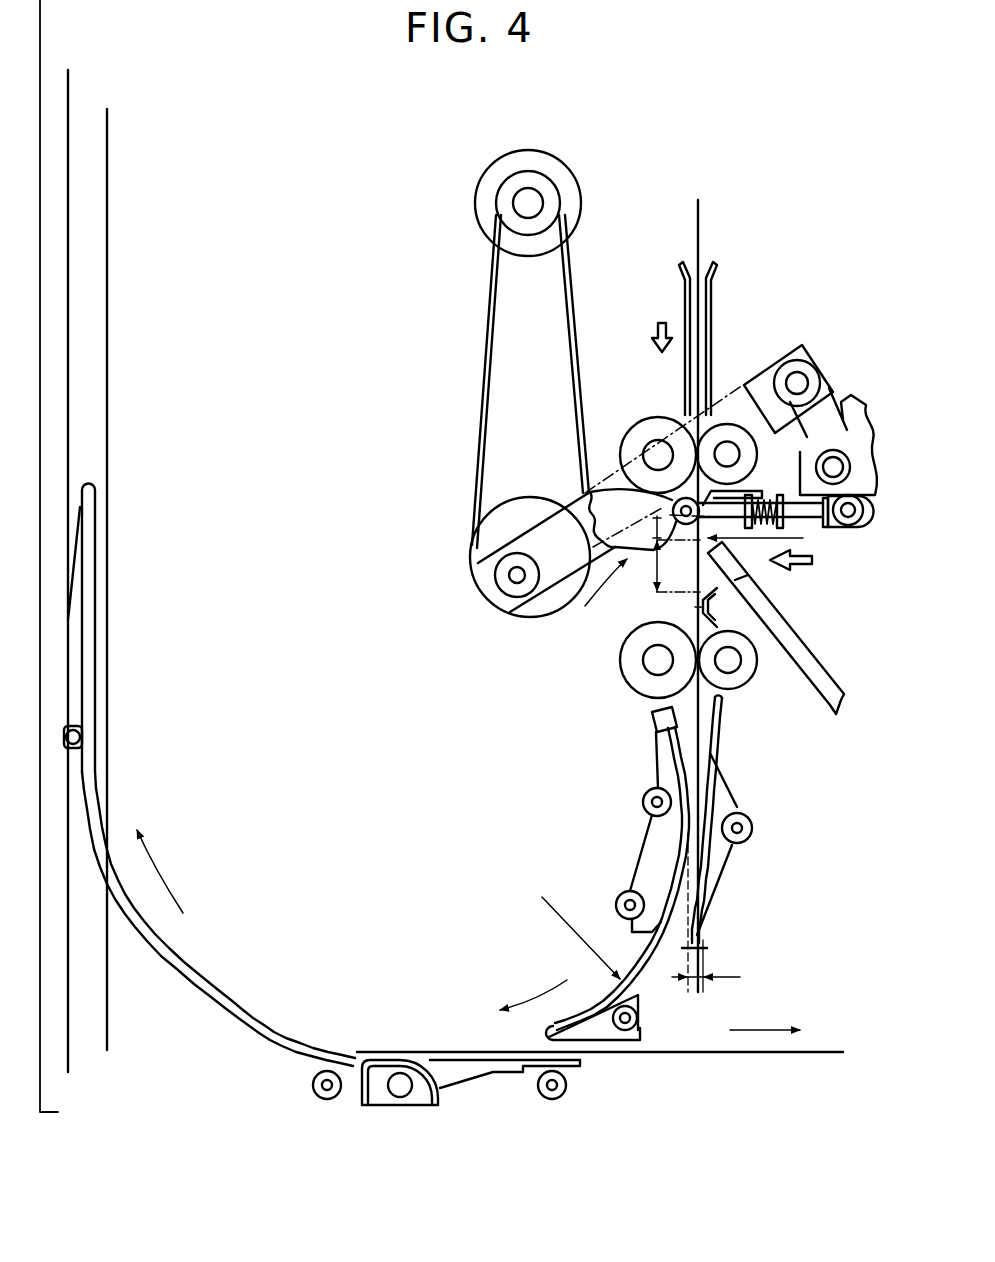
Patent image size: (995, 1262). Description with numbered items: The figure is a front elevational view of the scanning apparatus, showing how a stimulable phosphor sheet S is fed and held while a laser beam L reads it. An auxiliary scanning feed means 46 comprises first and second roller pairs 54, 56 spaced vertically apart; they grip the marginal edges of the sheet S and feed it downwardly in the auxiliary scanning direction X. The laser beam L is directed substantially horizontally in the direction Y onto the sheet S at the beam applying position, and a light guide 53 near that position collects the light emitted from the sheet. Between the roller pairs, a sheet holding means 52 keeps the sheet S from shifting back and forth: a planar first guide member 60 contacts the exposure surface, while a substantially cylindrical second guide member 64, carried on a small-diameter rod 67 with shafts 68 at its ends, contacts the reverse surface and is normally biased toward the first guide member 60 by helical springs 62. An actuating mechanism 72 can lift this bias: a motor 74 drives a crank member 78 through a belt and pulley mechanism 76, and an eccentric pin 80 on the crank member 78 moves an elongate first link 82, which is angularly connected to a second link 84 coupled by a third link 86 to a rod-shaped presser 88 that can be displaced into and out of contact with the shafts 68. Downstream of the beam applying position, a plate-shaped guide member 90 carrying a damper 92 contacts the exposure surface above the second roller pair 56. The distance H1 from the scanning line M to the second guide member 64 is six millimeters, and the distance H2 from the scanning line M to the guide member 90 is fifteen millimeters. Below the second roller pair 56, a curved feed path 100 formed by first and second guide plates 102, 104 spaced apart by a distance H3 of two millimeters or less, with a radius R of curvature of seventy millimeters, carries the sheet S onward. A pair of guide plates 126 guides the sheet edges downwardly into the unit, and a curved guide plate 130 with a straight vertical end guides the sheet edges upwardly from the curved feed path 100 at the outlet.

The auxiliary scanning feed means 46 is at (644, 415).
The sheet holding means 52 is at (592, 648).
The light guide 53 is at (820, 664).
The first roller pair 54 is at (642, 437).
The second roller pair 56 is at (623, 662).
The first guide member 60 is at (748, 478).
The helical springs 62 is at (773, 497).
The second guide member 64 is at (676, 500).
The small-diameter rod 67 is at (715, 427).
The shafts 68 is at (822, 518).
The actuating mechanism 72 is at (581, 163).
The motor 74 is at (528, 158).
The belt and pulley mechanism 76 is at (486, 352).
The crank member 78 is at (508, 512).
The eccentric pin 80 is at (515, 576).
The first link 82 is at (538, 553).
The second link 84 is at (828, 445).
The third link 86 is at (853, 497).
The presser 88 is at (868, 510).
The guide member 90 is at (718, 605).
The damper 92 is at (700, 607).
The curved feed path 100 is at (752, 821).
The first guide plate 102 is at (712, 738).
The second guide plate 104 is at (680, 729).
The guide plates 126 is at (712, 290).
The curved guide plate 130 is at (157, 958).
The stimulable phosphor sheet S is at (698, 232).
The auxiliary scanning direction X is at (662, 358).
The laser beam applying direction Y is at (778, 561).
The laser beam L is at (803, 538).
The scanning line M is at (676, 567).
The distance from scanning line to second guide member H1 is at (657, 524).
The distance from scanning line to guide member H2 is at (616, 546).
The distance between guide plates H3 is at (712, 912).
The radius of curvature R is at (580, 924).